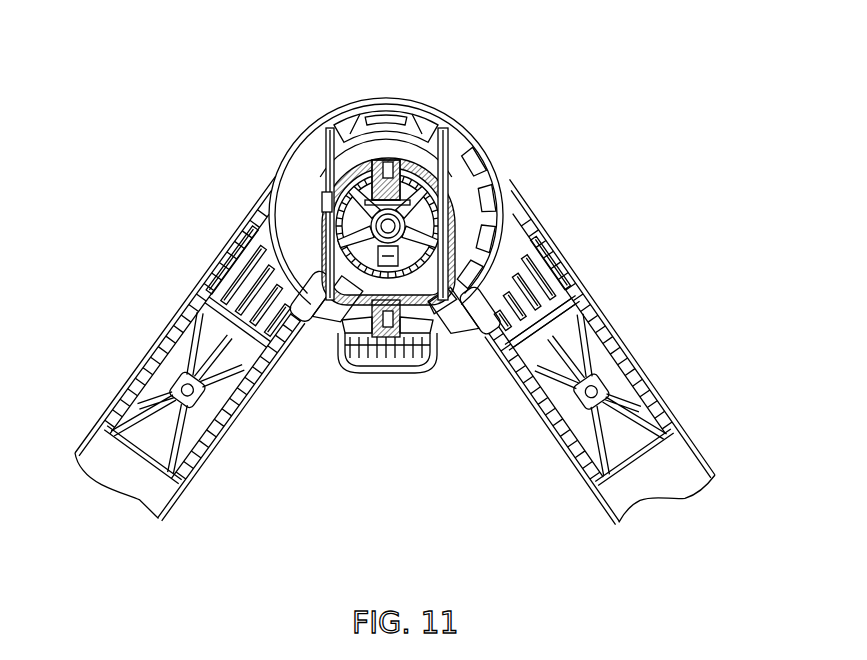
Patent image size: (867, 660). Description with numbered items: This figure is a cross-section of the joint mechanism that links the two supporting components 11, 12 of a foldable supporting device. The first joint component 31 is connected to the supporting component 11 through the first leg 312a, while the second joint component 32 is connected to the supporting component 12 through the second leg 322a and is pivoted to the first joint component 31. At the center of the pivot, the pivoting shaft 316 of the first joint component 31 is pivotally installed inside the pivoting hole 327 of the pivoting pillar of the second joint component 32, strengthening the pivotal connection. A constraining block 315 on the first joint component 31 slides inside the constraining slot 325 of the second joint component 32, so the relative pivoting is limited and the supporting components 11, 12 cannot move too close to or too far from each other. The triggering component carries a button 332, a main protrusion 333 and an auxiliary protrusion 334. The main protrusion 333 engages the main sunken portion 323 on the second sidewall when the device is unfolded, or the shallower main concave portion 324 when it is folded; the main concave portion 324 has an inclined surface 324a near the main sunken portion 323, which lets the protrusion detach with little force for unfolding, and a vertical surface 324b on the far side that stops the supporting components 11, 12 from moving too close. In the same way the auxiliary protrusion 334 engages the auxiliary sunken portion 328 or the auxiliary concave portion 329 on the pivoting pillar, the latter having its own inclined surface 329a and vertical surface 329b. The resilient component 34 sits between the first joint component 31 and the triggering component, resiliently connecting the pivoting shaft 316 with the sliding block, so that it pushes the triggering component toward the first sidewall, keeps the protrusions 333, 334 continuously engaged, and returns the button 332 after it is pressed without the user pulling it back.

The supporting component 11 is at (102, 455).
The supporting component 12 is at (658, 485).
The first joint component 31 is at (218, 243).
The second joint component 32 is at (525, 195).
The resilient component 34 is at (378, 275).
The first leg 312a is at (203, 287).
The constraining block 315 is at (440, 128).
The pivoting shaft 316 is at (445, 212).
The second leg 322a is at (570, 275).
The main sunken portion 323 is at (385, 330).
The main concave portion 324 is at (500, 268).
The inclined surface 324a is at (455, 320).
The vertical surface 324b is at (465, 285).
The constraining slot 325 is at (443, 155).
The pivoting hole 327 is at (398, 216).
The auxiliary sunken portion 328 is at (388, 166).
The auxiliary concave portion 329 is at (326, 186).
The inclined surface 329a is at (325, 177).
The vertical surface 329b is at (322, 203).
The button 332 is at (420, 368).
The main protrusion 333 is at (398, 358).
The auxiliary protrusion 334 is at (365, 175).